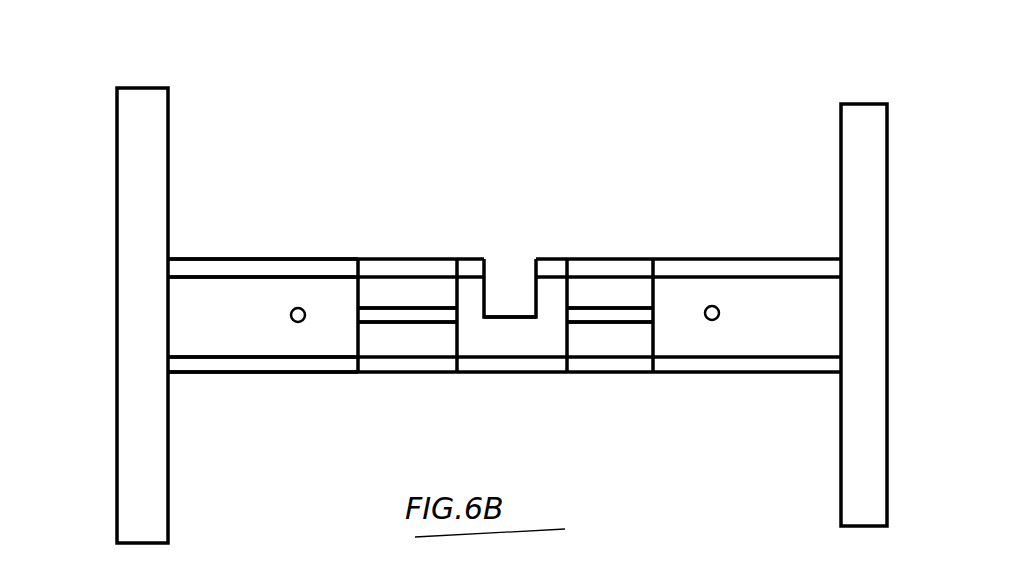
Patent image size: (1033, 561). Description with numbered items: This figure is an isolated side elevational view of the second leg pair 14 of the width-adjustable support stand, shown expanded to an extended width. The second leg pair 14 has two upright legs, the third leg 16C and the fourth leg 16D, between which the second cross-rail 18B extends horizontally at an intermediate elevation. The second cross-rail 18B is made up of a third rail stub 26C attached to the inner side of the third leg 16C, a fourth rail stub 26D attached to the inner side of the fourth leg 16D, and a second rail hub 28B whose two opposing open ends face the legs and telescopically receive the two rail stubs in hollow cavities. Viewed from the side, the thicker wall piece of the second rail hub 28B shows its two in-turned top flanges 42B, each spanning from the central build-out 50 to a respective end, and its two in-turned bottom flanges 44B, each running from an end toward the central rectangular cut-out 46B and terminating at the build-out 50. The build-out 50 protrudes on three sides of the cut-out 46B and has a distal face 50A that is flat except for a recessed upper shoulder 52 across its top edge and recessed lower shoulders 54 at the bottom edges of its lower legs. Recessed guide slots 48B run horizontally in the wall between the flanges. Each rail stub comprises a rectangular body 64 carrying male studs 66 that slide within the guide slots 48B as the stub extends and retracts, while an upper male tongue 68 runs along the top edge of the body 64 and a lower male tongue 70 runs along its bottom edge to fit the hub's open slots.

The second leg pair 14 is at (73, 148).
The third leg 16C is at (140, 180).
The fourth leg 16D is at (865, 217).
The second cross-rail 18B is at (263, 283).
The third rail stub 26C is at (265, 302).
The fourth rail stub 26D is at (690, 300).
The second rail hub 28B is at (513, 299).
The in-turned bottom flanges 44B is at (405, 265).
The central rectangular cut-out 46B is at (505, 267).
The guide slots 48B is at (430, 315).
The build-out 50 is at (543, 307).
The distal face of the build-out 50A is at (540, 341).
The recessed upper shoulder 52 is at (522, 362).
The recessed lower shoulders 54 is at (468, 268).
The rectangular body 64 is at (240, 328).
The male studs 66 is at (292, 320).
The upper male tongue 68 is at (290, 366).
The lower male tongue 70 is at (325, 270).
The in-turned top flanges 42B is at (412, 363).